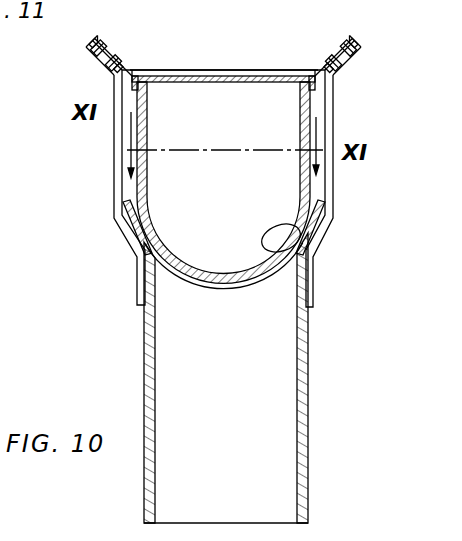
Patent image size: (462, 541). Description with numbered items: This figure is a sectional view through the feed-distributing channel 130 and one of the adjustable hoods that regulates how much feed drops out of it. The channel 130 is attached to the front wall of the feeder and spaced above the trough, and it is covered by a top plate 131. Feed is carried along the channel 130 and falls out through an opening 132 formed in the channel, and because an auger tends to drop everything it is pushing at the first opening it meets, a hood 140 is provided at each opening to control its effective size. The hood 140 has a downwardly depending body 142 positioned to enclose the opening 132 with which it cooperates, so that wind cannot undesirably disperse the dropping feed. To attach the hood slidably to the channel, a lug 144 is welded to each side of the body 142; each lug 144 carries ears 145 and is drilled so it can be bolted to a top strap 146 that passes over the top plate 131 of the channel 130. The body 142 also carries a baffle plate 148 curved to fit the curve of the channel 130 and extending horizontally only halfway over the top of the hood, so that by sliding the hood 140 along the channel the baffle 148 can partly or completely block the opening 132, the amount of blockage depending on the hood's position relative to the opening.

The channel 130 is at (309, 135).
The top plate 131 is at (274, 78).
The opening 132 is at (294, 228).
The hood 140 is at (336, 360).
The body 142 is at (307, 438).
The lug 144 is at (113, 145).
The ears 145 is at (86, 52).
The top strap 146 is at (187, 70).
The baffle plate 148 is at (188, 285).